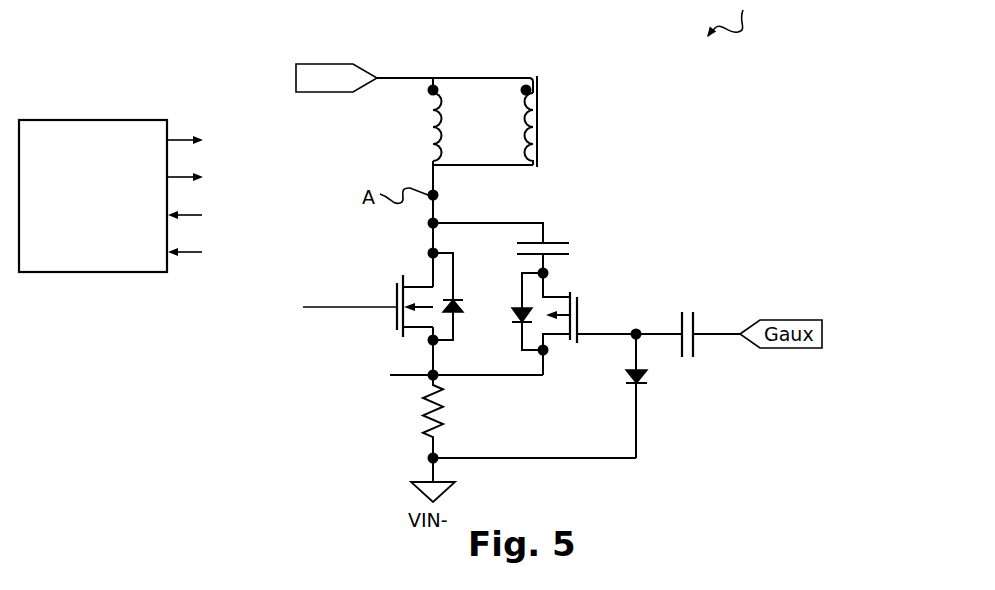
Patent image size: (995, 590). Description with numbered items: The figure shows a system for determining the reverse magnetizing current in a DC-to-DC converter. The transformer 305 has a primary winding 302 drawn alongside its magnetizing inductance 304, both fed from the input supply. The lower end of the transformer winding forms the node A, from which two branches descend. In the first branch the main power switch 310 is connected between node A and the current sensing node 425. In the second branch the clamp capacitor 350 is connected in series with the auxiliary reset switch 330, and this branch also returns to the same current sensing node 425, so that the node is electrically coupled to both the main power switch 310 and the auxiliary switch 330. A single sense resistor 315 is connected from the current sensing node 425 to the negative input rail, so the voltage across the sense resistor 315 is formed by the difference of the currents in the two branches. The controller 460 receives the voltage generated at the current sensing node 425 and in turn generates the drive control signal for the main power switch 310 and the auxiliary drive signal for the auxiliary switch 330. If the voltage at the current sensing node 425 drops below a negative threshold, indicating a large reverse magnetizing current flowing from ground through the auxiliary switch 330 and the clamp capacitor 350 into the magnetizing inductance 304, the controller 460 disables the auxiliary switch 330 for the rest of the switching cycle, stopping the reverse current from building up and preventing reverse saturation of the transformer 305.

The primary winding Np 302 is at (537, 102).
The magnetizing inductance Lm 304 is at (397, 153).
The transformer 305 is at (455, 64).
The main power switch Q1 310 is at (350, 313).
The sense resistor RS 315 is at (397, 435).
The auxiliary switch Q2 330 is at (627, 278).
The clamp capacitor CC 350 is at (602, 213).
The node CS 425 is at (357, 373).
The controller 460 is at (140, 196).